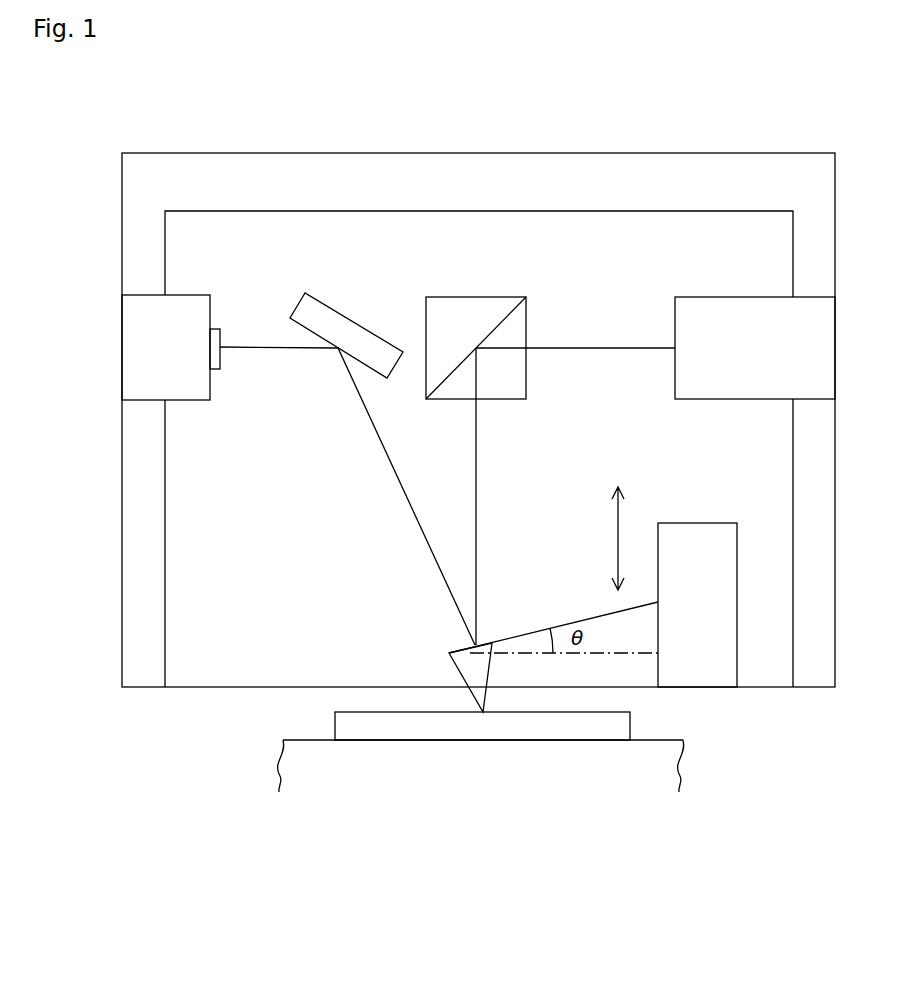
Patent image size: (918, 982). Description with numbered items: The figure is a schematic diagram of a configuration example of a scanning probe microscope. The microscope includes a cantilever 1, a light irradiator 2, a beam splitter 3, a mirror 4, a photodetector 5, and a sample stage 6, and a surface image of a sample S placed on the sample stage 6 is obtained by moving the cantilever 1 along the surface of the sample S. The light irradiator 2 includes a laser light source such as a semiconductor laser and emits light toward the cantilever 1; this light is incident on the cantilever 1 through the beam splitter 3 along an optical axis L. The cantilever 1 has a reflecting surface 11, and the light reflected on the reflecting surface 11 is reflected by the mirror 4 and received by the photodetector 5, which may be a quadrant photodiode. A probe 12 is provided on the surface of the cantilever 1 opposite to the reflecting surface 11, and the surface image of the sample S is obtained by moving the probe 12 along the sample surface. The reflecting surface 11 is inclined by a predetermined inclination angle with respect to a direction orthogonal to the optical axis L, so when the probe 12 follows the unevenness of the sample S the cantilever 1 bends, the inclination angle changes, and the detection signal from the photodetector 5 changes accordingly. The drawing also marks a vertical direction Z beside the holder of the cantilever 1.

The cantilever 1 is at (505, 618).
The light irradiator 2 is at (726, 297).
The beam splitter 3 is at (478, 297).
The mirror 4 is at (343, 313).
The photodetector 5 is at (223, 333).
The sample stage 6 is at (300, 740).
The reflecting surface 11 is at (466, 644).
The probe 12 is at (456, 673).
The optical axis L is at (580, 347).
The sample S is at (425, 740).
The Z direction Z is at (618, 520).